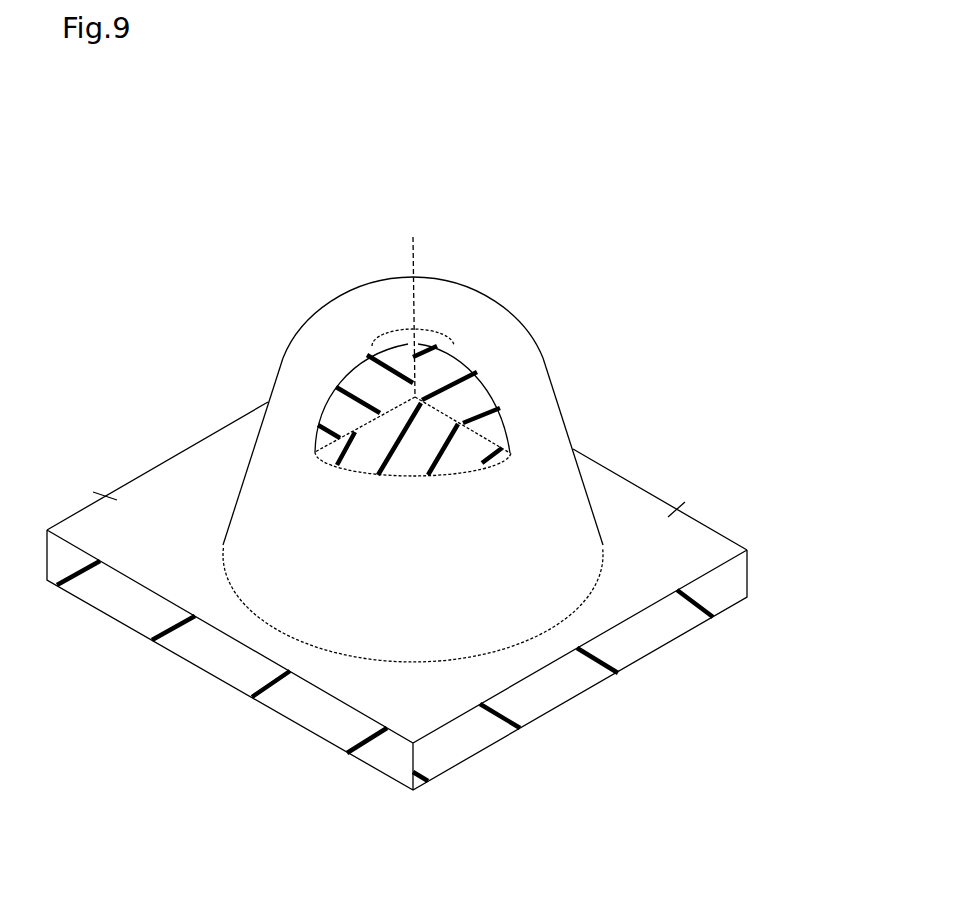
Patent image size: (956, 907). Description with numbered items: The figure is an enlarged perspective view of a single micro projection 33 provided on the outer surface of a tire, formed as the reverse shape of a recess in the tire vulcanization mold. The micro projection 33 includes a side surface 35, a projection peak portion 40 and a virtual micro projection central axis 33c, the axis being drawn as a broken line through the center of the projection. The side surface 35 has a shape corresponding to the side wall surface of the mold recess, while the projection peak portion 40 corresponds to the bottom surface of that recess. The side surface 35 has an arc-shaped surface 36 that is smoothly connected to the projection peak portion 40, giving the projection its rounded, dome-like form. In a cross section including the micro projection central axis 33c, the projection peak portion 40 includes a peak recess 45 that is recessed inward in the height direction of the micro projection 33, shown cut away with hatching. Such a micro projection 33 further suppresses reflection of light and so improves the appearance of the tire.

The micro projection 33 is at (421, 447).
The micro projection central axis 33c is at (418, 256).
The side surface 35 is at (270, 496).
The arc-shaped surface 36 is at (320, 355).
The projection peak portion 40 is at (485, 290).
The peak recess 45 is at (406, 341).